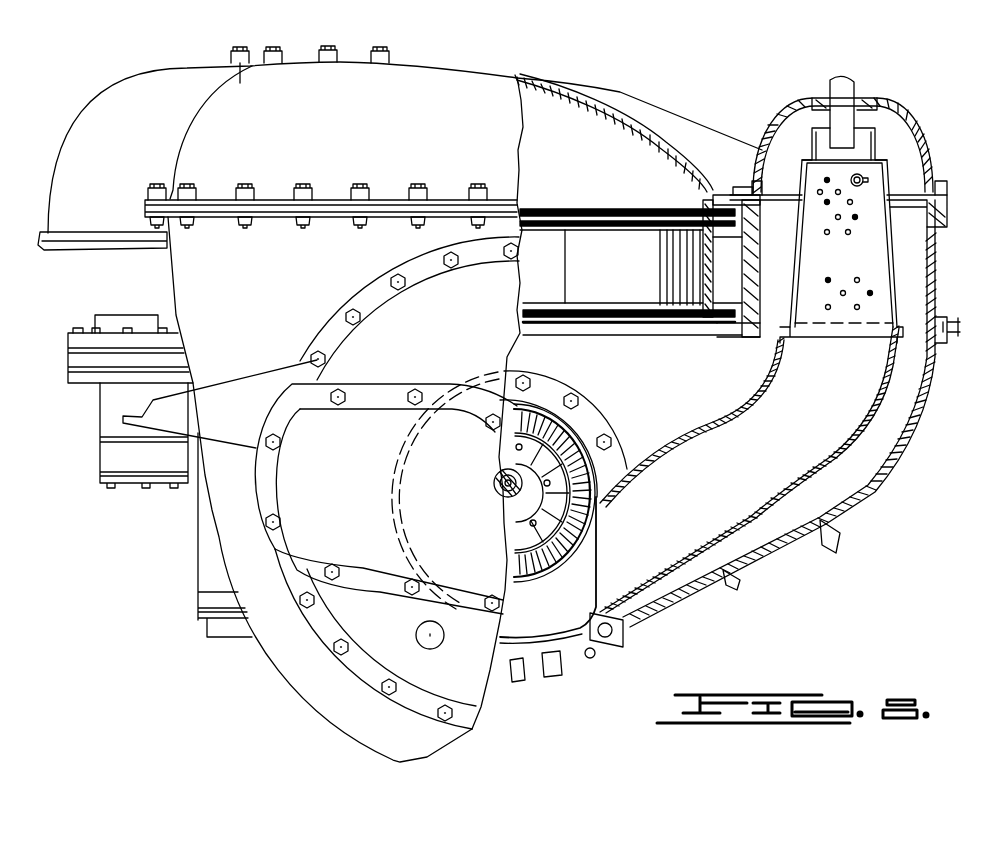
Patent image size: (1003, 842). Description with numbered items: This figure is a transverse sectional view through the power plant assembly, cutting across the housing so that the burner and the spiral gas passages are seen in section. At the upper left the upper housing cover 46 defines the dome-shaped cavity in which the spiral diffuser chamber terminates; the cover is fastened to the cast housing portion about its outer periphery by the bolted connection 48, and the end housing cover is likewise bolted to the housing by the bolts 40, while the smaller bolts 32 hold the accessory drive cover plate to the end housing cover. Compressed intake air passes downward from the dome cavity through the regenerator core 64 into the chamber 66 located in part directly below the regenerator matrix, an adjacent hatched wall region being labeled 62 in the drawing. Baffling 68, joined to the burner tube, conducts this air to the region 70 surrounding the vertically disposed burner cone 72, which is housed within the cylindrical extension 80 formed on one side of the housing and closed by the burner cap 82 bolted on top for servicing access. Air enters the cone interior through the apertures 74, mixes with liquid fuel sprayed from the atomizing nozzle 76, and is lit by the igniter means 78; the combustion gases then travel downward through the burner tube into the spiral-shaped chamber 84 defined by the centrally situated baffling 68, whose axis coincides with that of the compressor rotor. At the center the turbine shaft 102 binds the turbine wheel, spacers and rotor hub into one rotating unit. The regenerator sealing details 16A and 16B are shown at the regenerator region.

The upper wall of volute casing 16A is at (628, 206).
The lower wall of volute casing 16B is at (655, 290).
The bolts 32 is at (412, 406).
The bolts 40 is at (360, 310).
The upper housing cover 46 is at (354, 129).
The bolted connection 48 is at (246, 192).
The chamber 62 is at (747, 243).
The regenerator core 64 is at (648, 269).
The chamber 66 is at (652, 380).
The baffling 68 is at (580, 367).
The region 70 is at (888, 246).
The burner cone 72 is at (888, 255).
The apertures 74 is at (814, 293).
The atomizing nozzle 76 is at (848, 88).
The igniter means 78 is at (866, 179).
The cylindrical extension 80 is at (937, 263).
The burner cap 82 is at (913, 125).
The spiral-shaped chamber 84 is at (572, 591).
The turbine shaft 102 is at (494, 486).